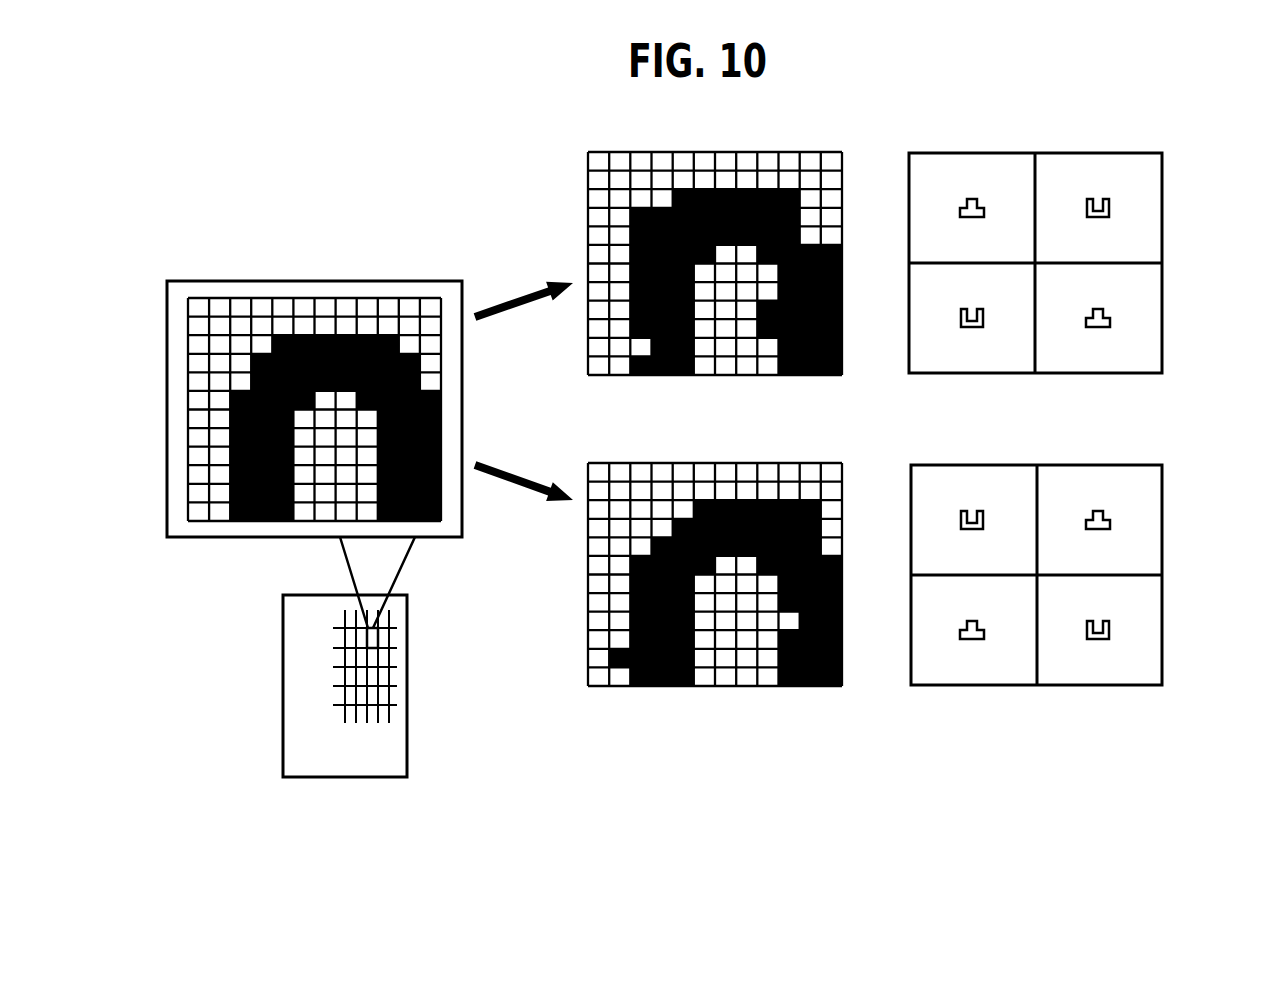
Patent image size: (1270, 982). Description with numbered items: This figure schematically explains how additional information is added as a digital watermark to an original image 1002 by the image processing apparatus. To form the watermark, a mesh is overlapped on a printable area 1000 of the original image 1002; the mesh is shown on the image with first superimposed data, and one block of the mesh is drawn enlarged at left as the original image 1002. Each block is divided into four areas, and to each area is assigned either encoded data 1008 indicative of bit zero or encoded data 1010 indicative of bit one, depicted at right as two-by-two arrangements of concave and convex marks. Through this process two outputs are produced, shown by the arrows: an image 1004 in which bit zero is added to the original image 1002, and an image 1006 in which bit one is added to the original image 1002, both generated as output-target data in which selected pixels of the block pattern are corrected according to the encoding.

The printable area 1000 is at (407, 685).
The original image 1002 is at (462, 405).
The image in which bit 0 is added 1004 is at (588, 198).
The image in which bit 1 is added 1006 is at (588, 620).
The encoded data indicative of bit 0 1008 is at (1163, 210).
The encoded data indicative of bit 1 1010 is at (1163, 520).